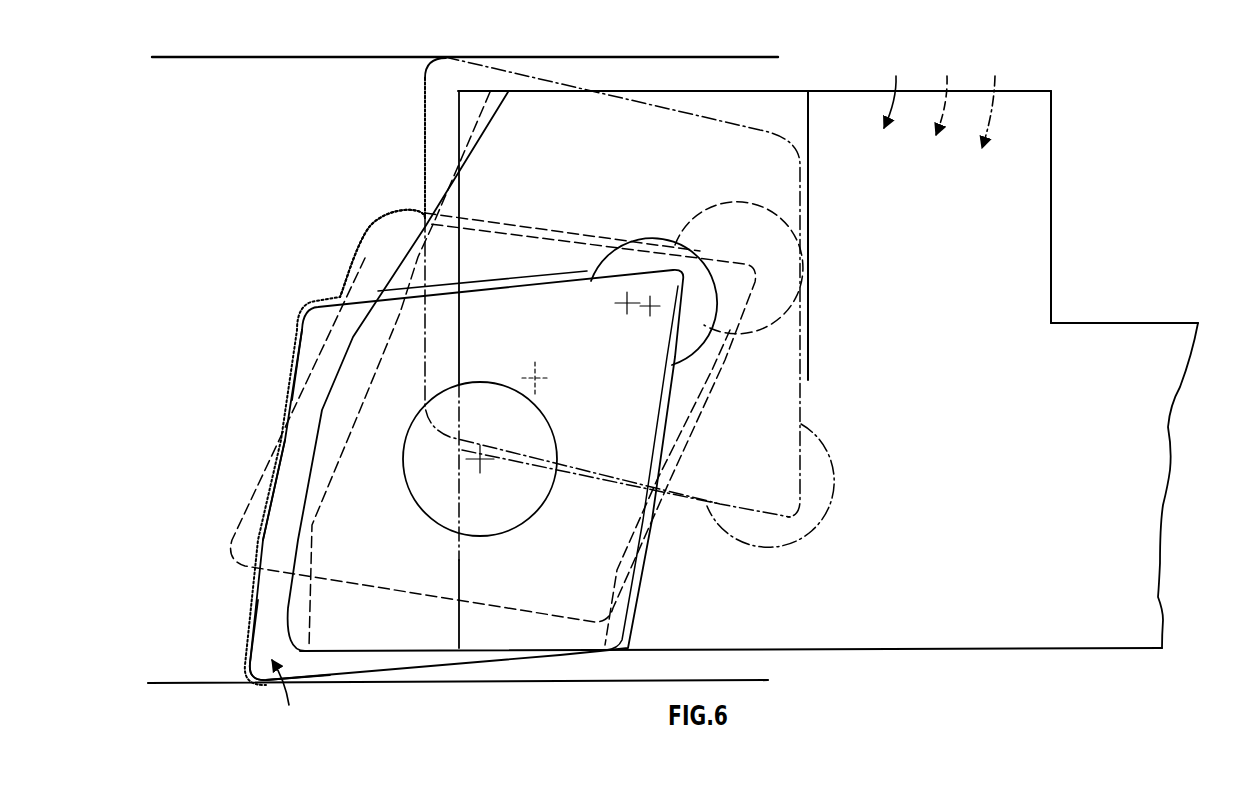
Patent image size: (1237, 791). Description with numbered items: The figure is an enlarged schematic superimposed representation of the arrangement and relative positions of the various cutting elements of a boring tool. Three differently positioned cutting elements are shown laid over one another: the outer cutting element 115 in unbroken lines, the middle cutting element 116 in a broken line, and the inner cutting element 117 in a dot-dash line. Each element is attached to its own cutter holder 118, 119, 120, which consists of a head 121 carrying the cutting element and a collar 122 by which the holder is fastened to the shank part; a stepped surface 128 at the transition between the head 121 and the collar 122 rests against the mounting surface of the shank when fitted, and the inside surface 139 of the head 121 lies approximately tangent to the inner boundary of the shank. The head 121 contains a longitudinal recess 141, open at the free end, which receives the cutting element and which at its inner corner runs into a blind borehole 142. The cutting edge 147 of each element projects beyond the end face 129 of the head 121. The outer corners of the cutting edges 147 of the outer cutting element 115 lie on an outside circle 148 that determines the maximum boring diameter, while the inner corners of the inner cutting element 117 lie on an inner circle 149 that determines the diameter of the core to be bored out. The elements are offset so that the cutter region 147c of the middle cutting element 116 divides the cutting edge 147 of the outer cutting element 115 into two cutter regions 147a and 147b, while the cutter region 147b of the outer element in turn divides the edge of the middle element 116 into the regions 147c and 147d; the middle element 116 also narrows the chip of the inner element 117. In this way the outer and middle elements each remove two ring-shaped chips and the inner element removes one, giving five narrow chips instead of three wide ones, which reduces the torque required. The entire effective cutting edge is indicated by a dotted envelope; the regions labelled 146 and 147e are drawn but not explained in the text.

The outer cutting element 115 is at (289, 698).
The middle cutting element 116 is at (358, 258).
The inner cutting element 117 is at (443, 76).
The cutter holder 118 is at (900, 85).
The cutter holder 119 is at (950, 89).
The cutter holder 120 is at (999, 95).
The head 121 is at (1037, 155).
The collar 122 is at (1145, 342).
The stepped surface 128 is at (1051, 216).
The end face of head 129 is at (458, 158).
The inside surface of head 139 is at (1028, 91).
The recess 141 is at (516, 282).
The blind borehole 142 is at (808, 288).
The bore 146 is at (543, 410).
The cutting edge 147 is at (280, 396).
The cutter region 147a is at (254, 629).
The cutter region 147b is at (294, 352).
The cutter region 147c is at (268, 476).
The cutting region 147d is at (350, 278).
The holder upper face 147e is at (423, 110).
The outside circle 148 is at (390, 682).
The inner circle 149 is at (222, 57).